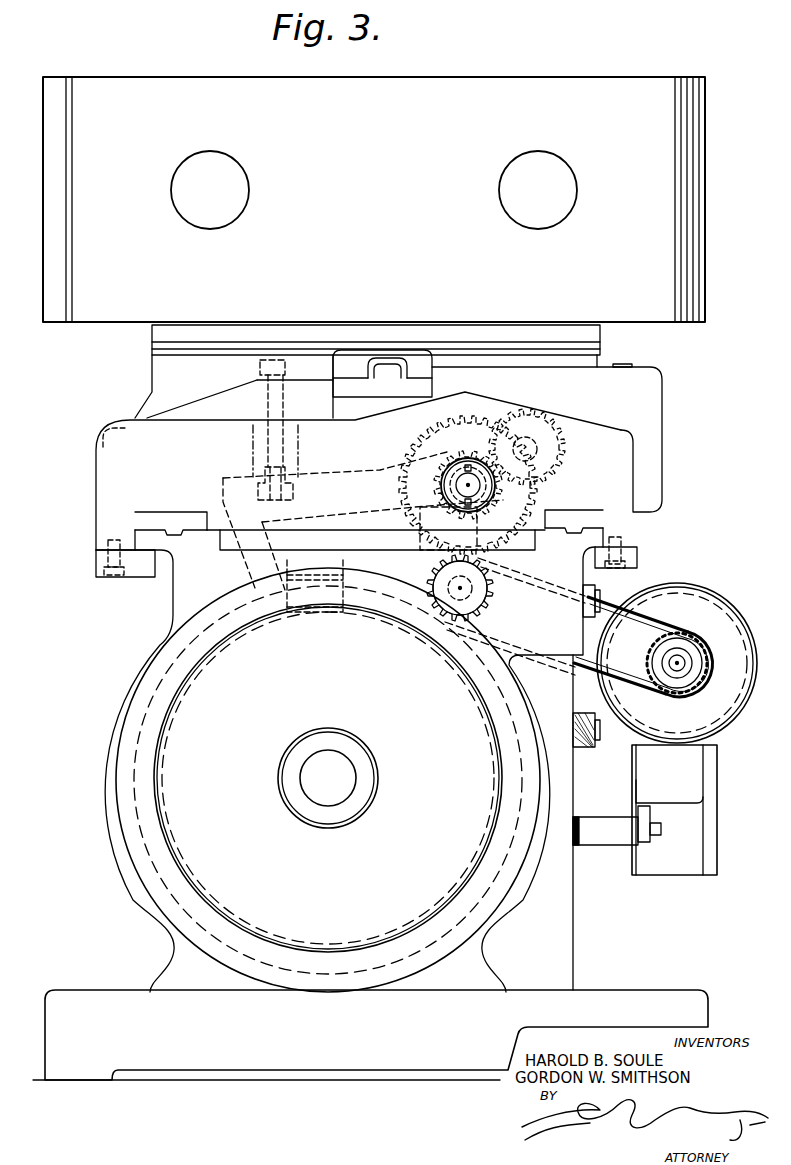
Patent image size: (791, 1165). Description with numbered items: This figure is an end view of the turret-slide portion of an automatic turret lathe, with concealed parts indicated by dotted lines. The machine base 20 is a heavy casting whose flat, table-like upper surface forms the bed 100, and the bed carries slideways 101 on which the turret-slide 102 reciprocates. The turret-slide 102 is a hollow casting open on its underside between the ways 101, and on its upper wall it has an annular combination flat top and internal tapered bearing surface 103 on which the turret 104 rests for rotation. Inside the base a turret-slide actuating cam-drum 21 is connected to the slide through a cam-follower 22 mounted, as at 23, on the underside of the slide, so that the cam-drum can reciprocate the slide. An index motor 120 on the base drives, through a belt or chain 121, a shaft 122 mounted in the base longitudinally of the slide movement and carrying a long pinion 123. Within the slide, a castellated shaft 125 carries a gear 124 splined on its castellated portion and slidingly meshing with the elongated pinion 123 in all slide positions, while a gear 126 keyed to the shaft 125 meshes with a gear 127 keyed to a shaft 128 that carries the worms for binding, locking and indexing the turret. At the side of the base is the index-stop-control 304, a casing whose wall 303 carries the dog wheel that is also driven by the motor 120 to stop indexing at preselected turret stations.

The machine base 20 is at (565, 925).
The cam-drum 21 is at (155, 868).
The cam-follower 22 is at (333, 600).
The cam-follower mounting 23 is at (218, 506).
The bed 100 is at (173, 594).
The slideways 101 is at (194, 533).
The turret-slide 102 is at (656, 472).
The bearing surface 103 is at (598, 352).
The turret 104 is at (374, 199).
The index motor 120 is at (677, 663).
The belt or chain 121 is at (549, 592).
The shaft 122 is at (492, 597).
The long pinion 123 is at (476, 600).
The gear 124 is at (424, 443).
The castellated shaft 125 is at (451, 485).
The gear 126 is at (496, 491).
The gear 127 is at (553, 440).
The shaft 128 is at (540, 452).
The casing wall 303 is at (628, 805).
The index-stop-control 304 is at (666, 867).